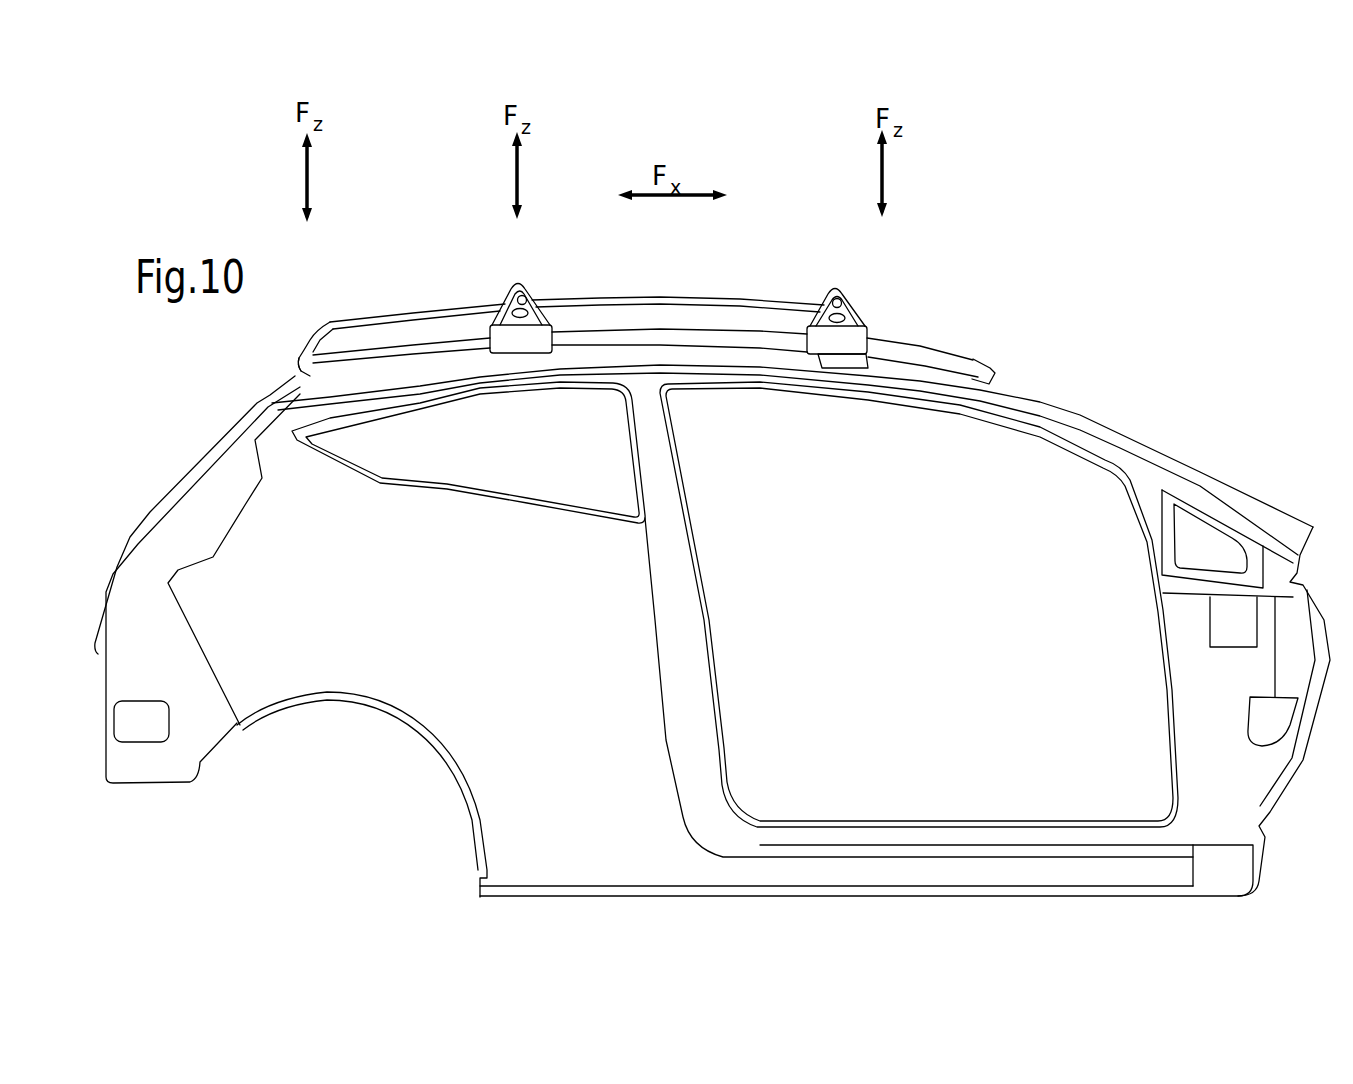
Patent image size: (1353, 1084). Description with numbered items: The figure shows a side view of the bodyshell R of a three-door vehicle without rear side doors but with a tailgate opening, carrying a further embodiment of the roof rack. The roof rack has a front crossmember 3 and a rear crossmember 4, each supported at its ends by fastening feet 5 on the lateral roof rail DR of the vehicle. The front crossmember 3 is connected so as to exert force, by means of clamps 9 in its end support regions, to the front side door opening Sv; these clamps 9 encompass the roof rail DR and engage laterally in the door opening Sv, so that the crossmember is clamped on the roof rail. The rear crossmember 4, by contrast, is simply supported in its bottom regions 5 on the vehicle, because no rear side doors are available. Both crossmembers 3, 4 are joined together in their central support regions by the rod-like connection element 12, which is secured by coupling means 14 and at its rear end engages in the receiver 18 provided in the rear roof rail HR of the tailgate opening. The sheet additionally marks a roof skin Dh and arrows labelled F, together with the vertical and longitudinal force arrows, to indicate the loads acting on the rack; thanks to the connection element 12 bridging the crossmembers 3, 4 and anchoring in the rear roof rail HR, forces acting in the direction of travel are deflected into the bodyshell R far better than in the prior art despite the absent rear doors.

The front crossmember 3 is at (848, 292).
The rear crossmember 4 is at (511, 286).
The fastening feet 5 is at (507, 347).
The clamps 9 is at (840, 363).
The connection element 12 is at (393, 318).
The coupling means 14 is at (294, 366).
The receiver 18 is at (289, 358).
The rear roof rail HR is at (273, 377).
The lateral roof rail DR is at (717, 350).
The roof skin / roof rail channel Dh is at (915, 372).
The front side door opening Sv is at (966, 612).
The front direction F is at (1141, 281).
The bodyshell R is at (1203, 418).